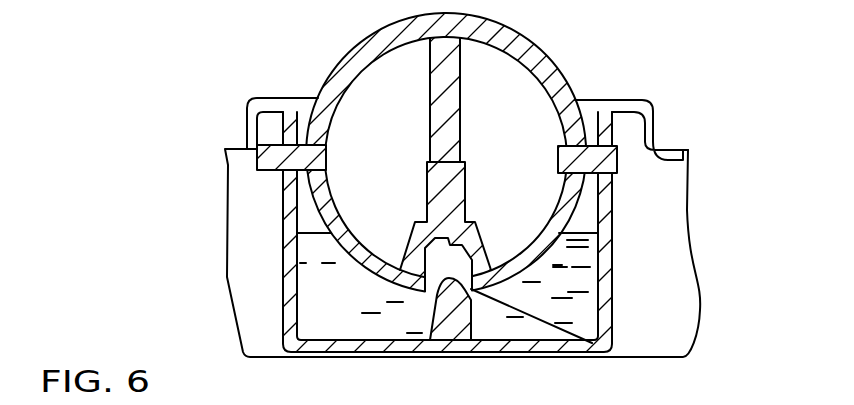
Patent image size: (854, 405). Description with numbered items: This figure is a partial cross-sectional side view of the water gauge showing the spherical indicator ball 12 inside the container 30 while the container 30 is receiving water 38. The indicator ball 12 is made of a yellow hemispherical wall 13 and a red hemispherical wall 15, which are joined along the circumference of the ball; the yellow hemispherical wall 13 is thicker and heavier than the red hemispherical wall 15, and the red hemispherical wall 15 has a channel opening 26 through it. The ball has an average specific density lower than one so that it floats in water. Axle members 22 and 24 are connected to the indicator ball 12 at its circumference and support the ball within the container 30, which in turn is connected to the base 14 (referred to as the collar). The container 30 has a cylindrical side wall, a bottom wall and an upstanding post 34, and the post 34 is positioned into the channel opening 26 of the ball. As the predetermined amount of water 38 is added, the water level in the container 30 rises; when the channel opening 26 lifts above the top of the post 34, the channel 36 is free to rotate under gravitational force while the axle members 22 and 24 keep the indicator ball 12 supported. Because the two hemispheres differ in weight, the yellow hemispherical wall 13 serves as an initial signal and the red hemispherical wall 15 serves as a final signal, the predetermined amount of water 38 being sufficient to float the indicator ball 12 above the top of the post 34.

The indicator ball 12 is at (548, 62).
The yellow hemispherical wall 13 is at (350, 50).
The base 14 is at (650, 103).
The red hemispherical wall 15 is at (335, 247).
The axle member 22 is at (254, 152).
The axle member 24 is at (618, 155).
The channel opening 26 is at (596, 350).
The container 30 is at (612, 240).
The post 34 is at (513, 342).
The channel 36 is at (425, 252).
The water 38 is at (352, 322).